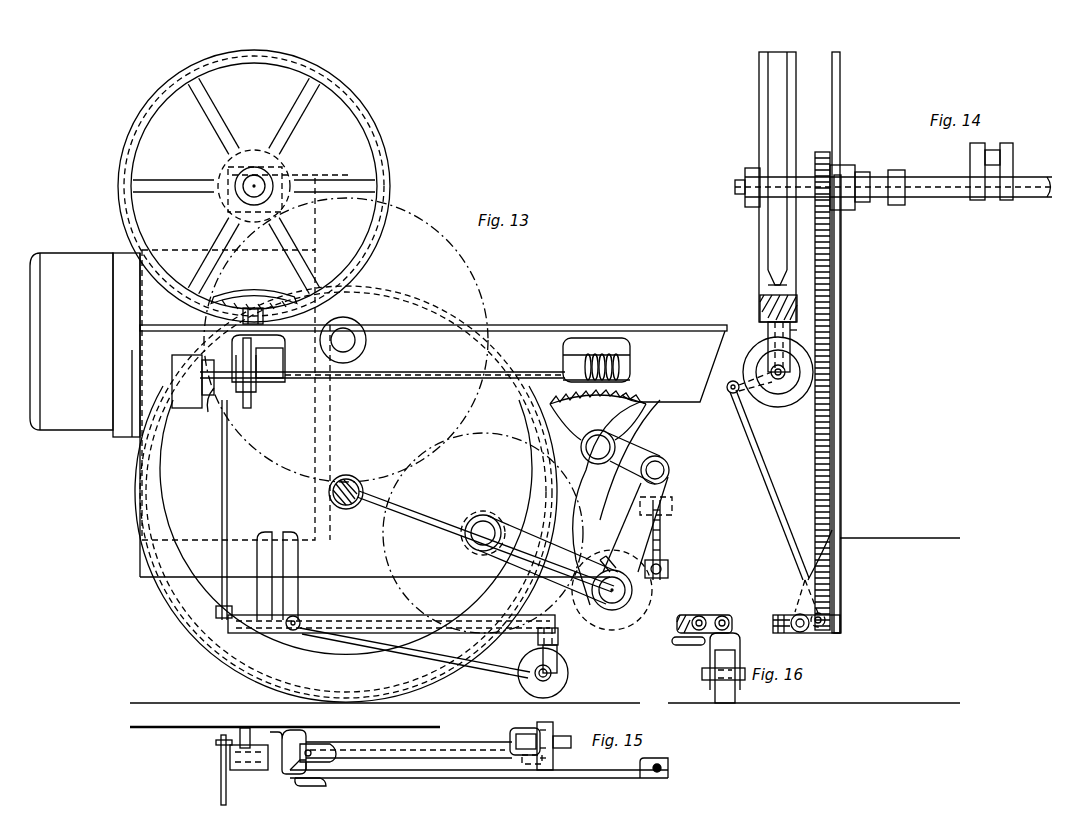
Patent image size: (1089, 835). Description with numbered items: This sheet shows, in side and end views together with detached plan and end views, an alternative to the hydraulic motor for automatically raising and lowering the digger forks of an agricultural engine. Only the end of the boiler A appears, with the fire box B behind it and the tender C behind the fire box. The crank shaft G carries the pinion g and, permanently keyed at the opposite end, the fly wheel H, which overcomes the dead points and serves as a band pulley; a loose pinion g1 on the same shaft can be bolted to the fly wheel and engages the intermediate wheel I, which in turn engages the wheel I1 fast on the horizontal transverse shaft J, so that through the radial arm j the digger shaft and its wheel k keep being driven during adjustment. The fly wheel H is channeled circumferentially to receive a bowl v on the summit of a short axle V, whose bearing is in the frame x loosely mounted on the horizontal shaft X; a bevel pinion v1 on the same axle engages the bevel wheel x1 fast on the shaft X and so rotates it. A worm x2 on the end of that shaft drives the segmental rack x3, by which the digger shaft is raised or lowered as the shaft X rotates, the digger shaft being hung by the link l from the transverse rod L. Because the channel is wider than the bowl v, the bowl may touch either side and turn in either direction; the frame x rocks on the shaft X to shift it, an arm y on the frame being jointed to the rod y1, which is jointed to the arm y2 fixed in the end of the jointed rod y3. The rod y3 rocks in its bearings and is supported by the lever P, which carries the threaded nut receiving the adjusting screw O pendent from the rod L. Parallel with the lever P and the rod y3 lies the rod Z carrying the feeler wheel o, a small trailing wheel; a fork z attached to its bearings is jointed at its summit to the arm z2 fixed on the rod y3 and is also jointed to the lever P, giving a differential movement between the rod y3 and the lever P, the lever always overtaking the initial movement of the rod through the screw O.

In FIG. 13, the fly wheel H is at (365, 116).
In FIG. 14, the fly wheel H is at (796, 105).
In FIG. 13, the pinion g is at (253, 152).
In FIG. 13, the crank shaft G is at (258, 183).
In FIG. 14, the crank shaft G is at (940, 190).
In FIG. 13, the brake shoe r is at (250, 300).
In FIG. 13, the boiler A is at (85, 345).
In FIG. 13, the fire box B is at (375, 397).
In FIG. 13, the tender C is at (433, 465).
In FIG. 13, the horizontal shaft X is at (382, 367).
In FIG. 14, the horizontal shaft X is at (778, 380).
In FIG. 13, the frame x is at (283, 352).
In FIG. 14, the frame x is at (798, 331).
In FIG. 13, the short axle V is at (270, 368).
In FIG. 13, the bevel wheel x1 is at (250, 400).
In FIG. 14, the bevel wheel x1 is at (790, 400).
In FIG. 13, the arm y is at (203, 408).
In FIG. 14, the arm y is at (733, 381).
In FIG. 13, the intermediate wheel I is at (473, 284).
In FIG. 13, the wheel I1 is at (504, 462).
In FIG. 14, the wheel I1 is at (841, 280).
In FIG. 13, the crank pin D is at (329, 492).
In FIG. 13, the horizontal transverse shaft J is at (483, 533).
In FIG. 13, the radial arm j is at (548, 560).
In FIG. 13, the wheel k is at (652, 592).
In FIG. 13, the worm x2 is at (596, 359).
In FIG. 16, the worm x2 is at (712, 615).
In FIG. 13, the segmental rack x3 is at (598, 415).
In FIG. 13, the transverse rod L is at (669, 470).
In FIG. 13, the link l is at (635, 524).
In FIG. 13, the feeler wheel o is at (662, 525).
In FIG. 16, the feeler wheel o is at (724, 676).
In FIG. 14, the rod y1 is at (770, 493).
In FIG. 13, the arm y2 is at (228, 490).
In FIG. 14, the arm y2 is at (790, 614).
In FIG. 15, the arm y2 is at (258, 735).
In FIG. 13, the jointed rod y3 is at (352, 614).
In FIG. 15, the jointed rod y3 is at (448, 745).
In FIG. 13, the fork z is at (547, 659).
In FIG. 16, the fork z is at (740, 648).
In FIG. 15, the fork z is at (553, 724).
In FIG. 13, the arm z2 is at (558, 637).
In FIG. 15, the arm z2 is at (556, 758).
In FIG. 15, the rod Z is at (505, 739).
In FIG. 15, the lever P is at (585, 779).
In FIG. 15, the screw O is at (668, 768).
In FIG. 14, the pinion g1 is at (826, 152).
In FIG. 14, the bowl v is at (760, 305).
In FIG. 14, the bevel pinion v1 is at (768, 342).